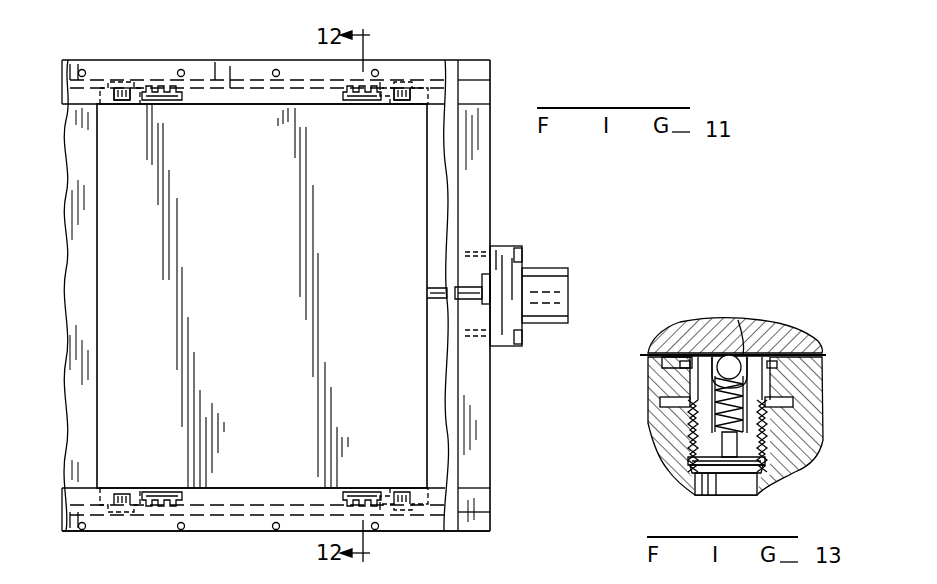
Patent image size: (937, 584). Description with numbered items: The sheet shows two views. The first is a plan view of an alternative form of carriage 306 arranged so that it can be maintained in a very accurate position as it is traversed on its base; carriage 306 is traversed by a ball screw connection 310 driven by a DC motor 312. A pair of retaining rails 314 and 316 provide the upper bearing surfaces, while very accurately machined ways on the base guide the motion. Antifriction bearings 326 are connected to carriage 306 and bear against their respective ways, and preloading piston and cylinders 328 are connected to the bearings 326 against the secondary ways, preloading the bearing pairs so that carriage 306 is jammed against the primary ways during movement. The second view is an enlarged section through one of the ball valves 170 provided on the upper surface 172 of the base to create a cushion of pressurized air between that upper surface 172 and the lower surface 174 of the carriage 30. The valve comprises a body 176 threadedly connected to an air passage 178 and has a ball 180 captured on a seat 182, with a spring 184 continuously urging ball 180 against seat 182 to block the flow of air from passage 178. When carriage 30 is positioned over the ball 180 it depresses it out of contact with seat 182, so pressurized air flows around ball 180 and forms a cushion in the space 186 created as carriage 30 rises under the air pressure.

In FIG. 11, the retaining rail 316 is at (96, 60).
In FIG. 11, the carriage 306 is at (403, 200).
In FIG. 11, the antifriction bearings 326 is at (128, 82).
In FIG. 11, the preloading piston and cylinders 328 is at (124, 106).
In FIG. 11, the retaining rail 314 is at (164, 530).
In FIG. 11, the ball screw connection 310 is at (425, 312).
In FIG. 11, the DC motor 312 is at (545, 273).
In FIG. 13, the ball valve 170 is at (640, 423).
In FIG. 13, the upper surface 172 is at (646, 355).
In FIG. 13, the lower surface 174 is at (822, 356).
In FIG. 13, the body 176 is at (822, 441).
In FIG. 13, the air passage 178 is at (758, 480).
In FIG. 13, the ball 180 is at (745, 342).
In FIG. 13, the seat 182 is at (726, 355).
In FIG. 13, the spring 184 is at (728, 435).
In FIG. 13, the space 186 is at (680, 344).
In FIG. 13, the carriage 30 is at (748, 318).